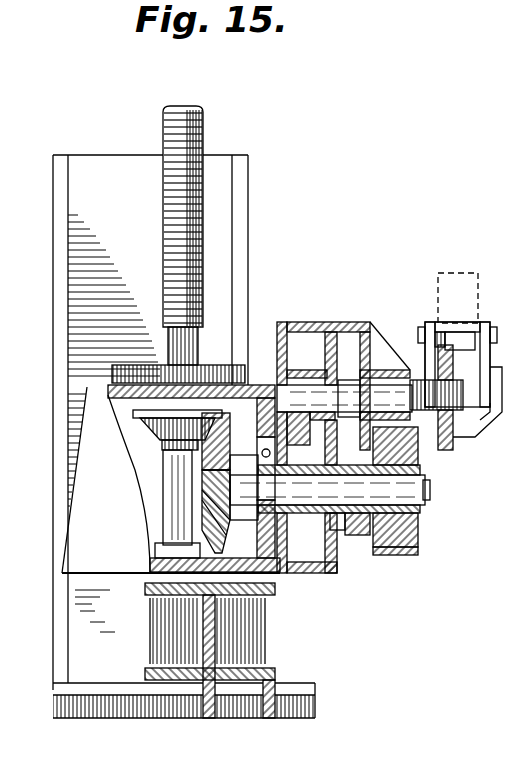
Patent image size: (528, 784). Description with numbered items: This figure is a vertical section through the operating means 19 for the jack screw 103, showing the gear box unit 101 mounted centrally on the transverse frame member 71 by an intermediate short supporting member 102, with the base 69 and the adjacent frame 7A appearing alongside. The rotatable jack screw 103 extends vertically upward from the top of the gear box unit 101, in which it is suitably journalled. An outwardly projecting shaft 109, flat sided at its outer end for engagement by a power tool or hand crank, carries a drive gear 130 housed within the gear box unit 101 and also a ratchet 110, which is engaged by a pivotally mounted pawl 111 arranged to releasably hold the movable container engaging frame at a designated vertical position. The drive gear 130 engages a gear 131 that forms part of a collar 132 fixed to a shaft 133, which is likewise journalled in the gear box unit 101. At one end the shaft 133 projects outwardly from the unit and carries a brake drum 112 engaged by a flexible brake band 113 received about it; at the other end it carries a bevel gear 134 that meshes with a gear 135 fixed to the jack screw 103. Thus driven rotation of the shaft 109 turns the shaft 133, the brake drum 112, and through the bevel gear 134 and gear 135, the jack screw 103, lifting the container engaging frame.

The frame 7A is at (90, 300).
The jack screw 103 is at (200, 228).
The gear 135 is at (140, 425).
The bevel gear 134 is at (205, 525).
The collar 132 is at (420, 463).
The gear box unit 101 is at (280, 322).
The drive gear 130 is at (335, 334).
The container engaging assembly operating means 19 is at (328, 300).
The brake drum 112 is at (418, 530).
The brake band 113 is at (418, 551).
The gear 131 is at (337, 530).
The shaft 133 is at (358, 535).
The ratchet 110 is at (455, 362).
The pawl 111 is at (465, 328).
The shaft 109 is at (470, 417).
The short supporting member 102 is at (215, 640).
The transverse frame member 71 is at (270, 683).
The base 69 is at (305, 688).